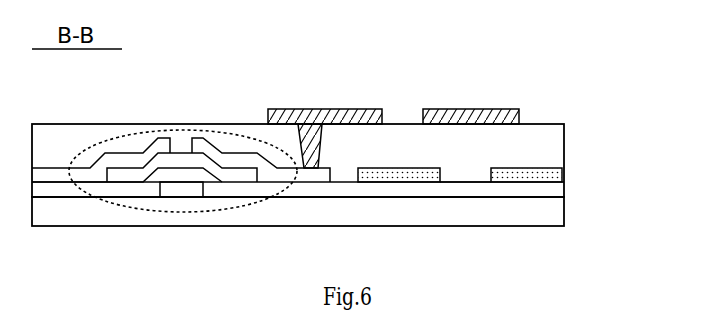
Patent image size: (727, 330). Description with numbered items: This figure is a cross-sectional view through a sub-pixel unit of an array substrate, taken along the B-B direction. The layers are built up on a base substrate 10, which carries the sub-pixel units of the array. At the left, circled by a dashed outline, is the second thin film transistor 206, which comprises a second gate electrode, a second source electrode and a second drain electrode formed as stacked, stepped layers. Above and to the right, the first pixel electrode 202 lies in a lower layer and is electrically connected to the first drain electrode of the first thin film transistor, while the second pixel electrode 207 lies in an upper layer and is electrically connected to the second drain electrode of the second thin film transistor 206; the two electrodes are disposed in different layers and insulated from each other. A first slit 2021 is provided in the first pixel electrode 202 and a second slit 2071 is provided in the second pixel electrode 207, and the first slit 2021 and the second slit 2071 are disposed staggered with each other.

The base substrate 10 is at (542, 214).
The first pixel electrode 202 is at (540, 177).
The first slit 2021 is at (545, 159).
The second thin film transistor 206 is at (155, 131).
The second pixel electrode 207 is at (519, 117).
The second slit 2071 is at (474, 122).